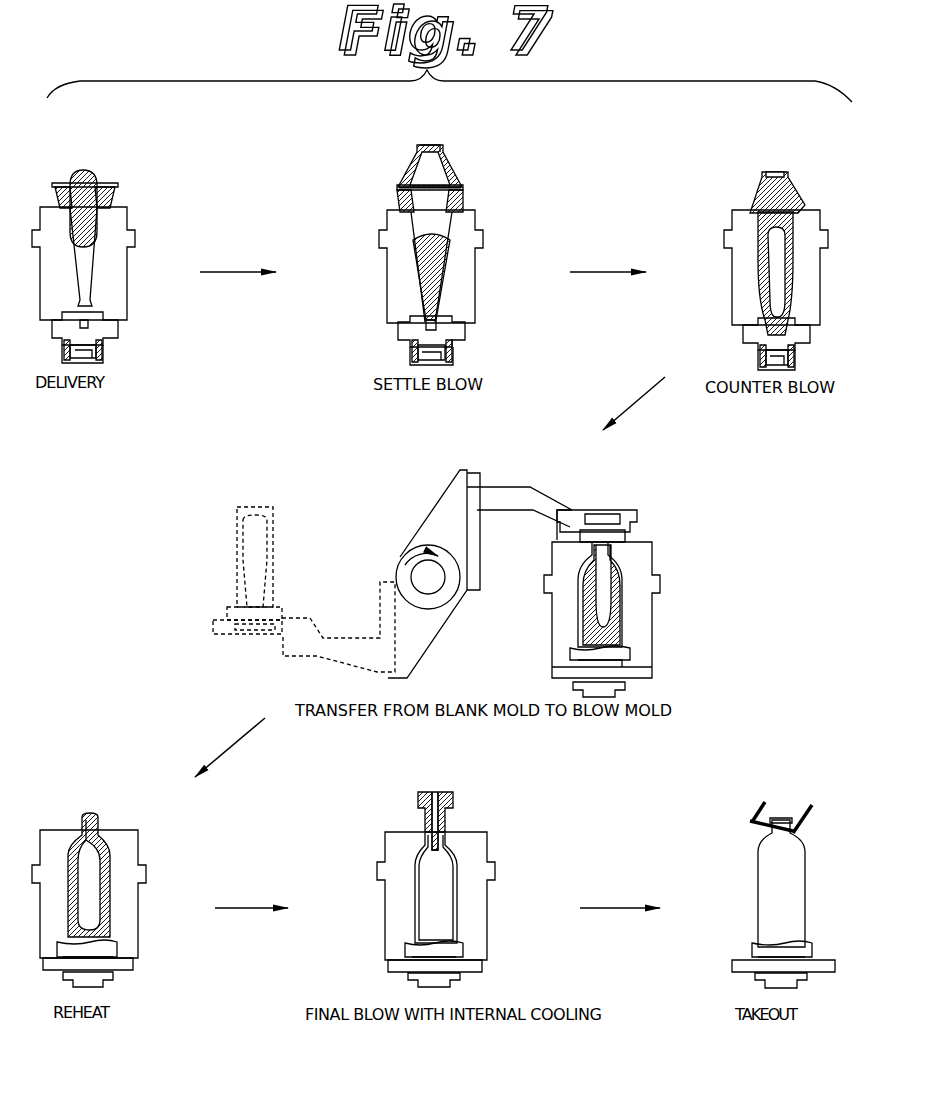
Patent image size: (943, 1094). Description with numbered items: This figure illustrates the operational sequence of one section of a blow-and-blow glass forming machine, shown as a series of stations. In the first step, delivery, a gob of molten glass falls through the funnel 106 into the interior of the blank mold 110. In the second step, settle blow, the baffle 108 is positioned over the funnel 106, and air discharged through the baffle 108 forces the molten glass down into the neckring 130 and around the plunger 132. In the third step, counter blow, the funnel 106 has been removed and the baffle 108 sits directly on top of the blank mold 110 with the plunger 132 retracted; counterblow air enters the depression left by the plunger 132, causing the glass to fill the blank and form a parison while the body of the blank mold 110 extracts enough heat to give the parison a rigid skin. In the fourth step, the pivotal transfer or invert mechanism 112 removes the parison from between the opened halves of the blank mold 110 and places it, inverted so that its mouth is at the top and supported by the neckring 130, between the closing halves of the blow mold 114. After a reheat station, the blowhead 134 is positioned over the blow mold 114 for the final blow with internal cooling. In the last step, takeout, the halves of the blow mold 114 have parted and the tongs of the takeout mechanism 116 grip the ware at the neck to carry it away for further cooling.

The funnel 106 is at (118, 197).
The baffle 108 is at (445, 160).
The blank mold 110 is at (127, 305).
The transfer or invert mechanism 112 is at (437, 517).
The blow mold 114 is at (652, 633).
The takeout mechanism 116 is at (752, 822).
The neckring 130 is at (463, 335).
The plunger 132 is at (432, 322).
The blowhead 134 is at (453, 807).